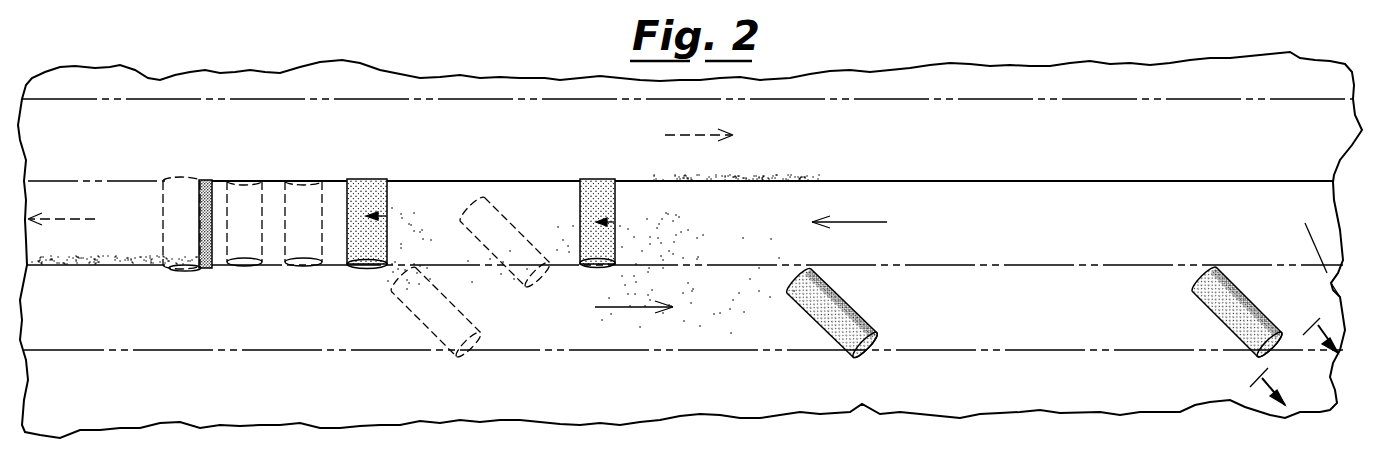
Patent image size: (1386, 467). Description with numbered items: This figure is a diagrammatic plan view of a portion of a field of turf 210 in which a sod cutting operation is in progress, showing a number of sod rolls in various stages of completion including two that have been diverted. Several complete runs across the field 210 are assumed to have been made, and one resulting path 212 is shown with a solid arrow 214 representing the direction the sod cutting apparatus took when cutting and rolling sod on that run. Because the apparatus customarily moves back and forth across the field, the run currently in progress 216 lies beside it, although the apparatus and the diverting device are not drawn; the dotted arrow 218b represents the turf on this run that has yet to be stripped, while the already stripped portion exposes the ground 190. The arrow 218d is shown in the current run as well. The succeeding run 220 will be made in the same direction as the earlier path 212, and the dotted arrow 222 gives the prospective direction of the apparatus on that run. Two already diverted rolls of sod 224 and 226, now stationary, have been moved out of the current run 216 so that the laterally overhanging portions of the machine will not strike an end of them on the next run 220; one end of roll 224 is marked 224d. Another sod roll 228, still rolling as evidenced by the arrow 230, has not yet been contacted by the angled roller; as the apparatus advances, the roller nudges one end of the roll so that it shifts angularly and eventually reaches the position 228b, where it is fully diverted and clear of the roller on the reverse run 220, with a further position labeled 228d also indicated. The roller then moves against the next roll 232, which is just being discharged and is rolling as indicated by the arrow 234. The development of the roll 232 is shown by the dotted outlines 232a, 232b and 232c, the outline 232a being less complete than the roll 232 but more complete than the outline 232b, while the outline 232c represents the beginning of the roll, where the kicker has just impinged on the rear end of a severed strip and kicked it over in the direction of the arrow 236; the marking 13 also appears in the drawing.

The field of turf 210 is at (1295, 52).
The path 212 is at (1031, 316).
The solid arrow 214 is at (637, 308).
The run currently in progress 216 is at (1029, 238).
The dotted arrow 218b is at (72, 219).
The direction of particle flow 218d is at (872, 222).
The succeeding run 220 is at (1031, 150).
The dotted arrow 222 is at (684, 133).
The diverted roll of sod 224 is at (1216, 318).
The granule end face 224d is at (1244, 301).
The diverted roll of sod 226 is at (811, 314).
The sod roll 228 is at (600, 180).
The roll position 228b is at (405, 308).
The granule prior position 228d is at (492, 206).
The arrow 230 is at (615, 228).
The fully formed roll 232 is at (378, 179).
The roll outline 232a is at (310, 179).
The roll outline 232b is at (252, 179).
The roll outline 232c is at (182, 179).
The arrow 234 is at (383, 222).
The arrow 236 is at (199, 217).
The ground 190 is at (1334, 283).
The section line 13 is at (1289, 314).